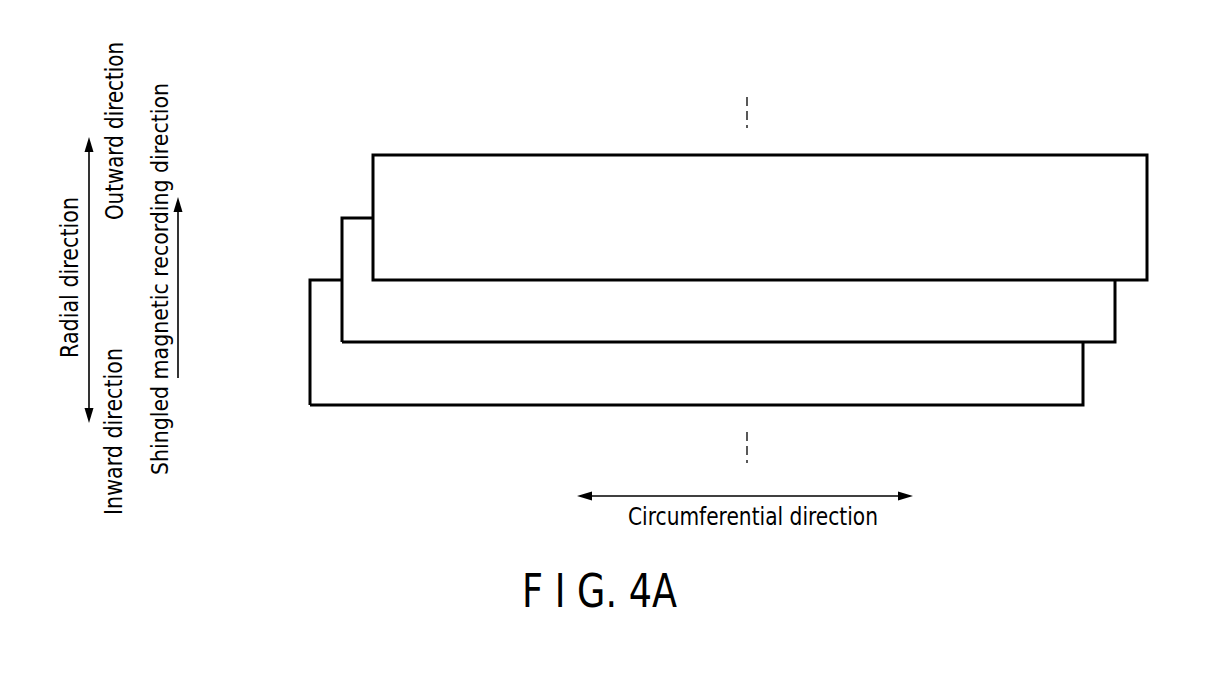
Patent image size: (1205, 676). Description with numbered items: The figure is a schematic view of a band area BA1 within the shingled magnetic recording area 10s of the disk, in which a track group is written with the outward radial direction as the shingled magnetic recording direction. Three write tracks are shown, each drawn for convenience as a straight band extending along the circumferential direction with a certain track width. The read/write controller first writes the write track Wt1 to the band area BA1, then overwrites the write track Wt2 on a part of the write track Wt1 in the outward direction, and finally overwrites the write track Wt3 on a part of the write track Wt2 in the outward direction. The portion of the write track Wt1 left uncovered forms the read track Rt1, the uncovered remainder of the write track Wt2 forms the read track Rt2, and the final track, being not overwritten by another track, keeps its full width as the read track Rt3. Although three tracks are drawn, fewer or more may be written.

The shingled magnetic recording area 10s is at (1031, 58).
The band area BA1 is at (1065, 117).
The write track Wt1 is at (682, 342).
The write track Wt2 is at (712, 280).
The write track Wt3 is at (701, 217).
The read track Rt1 is at (1076, 381).
The read track Rt2 is at (1108, 313).
The read track Rt3 is at (385, 181).